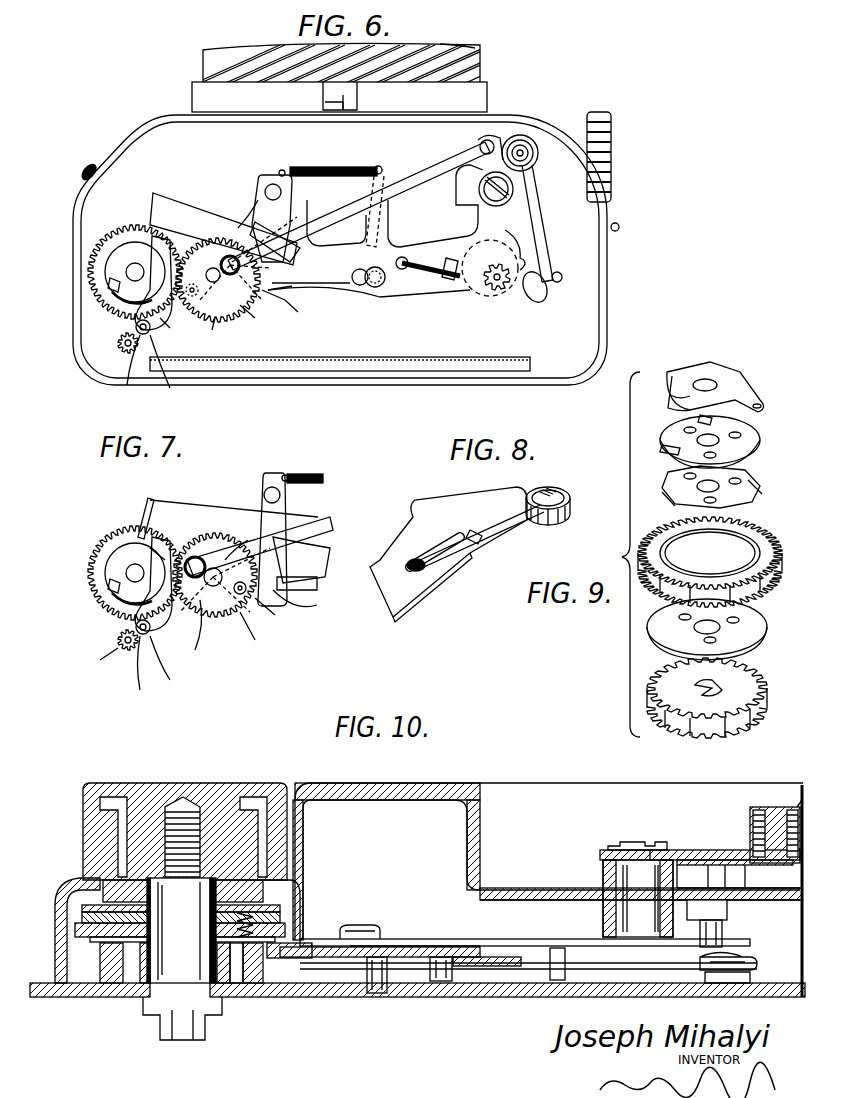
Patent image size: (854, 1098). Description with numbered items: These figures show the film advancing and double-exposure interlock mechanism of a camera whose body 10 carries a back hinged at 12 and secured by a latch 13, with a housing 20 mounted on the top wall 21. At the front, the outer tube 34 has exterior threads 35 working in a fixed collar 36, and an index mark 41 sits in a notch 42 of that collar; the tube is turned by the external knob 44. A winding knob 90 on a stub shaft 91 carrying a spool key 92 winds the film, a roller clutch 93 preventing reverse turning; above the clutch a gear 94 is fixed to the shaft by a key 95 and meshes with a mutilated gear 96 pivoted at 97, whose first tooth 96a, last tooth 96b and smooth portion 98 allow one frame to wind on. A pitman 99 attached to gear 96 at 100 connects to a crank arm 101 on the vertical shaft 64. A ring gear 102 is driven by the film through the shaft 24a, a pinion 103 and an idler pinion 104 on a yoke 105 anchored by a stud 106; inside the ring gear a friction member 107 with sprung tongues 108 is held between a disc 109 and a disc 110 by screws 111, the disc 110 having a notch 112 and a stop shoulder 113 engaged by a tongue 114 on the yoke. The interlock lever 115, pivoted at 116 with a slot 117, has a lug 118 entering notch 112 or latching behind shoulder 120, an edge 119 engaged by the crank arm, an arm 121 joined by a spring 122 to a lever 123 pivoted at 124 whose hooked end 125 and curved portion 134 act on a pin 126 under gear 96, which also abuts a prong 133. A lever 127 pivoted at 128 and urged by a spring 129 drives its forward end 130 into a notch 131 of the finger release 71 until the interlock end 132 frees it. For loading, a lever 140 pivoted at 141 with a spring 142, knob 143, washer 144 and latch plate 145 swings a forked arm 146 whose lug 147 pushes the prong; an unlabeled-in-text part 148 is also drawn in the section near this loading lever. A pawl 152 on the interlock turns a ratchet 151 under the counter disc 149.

In FIG. 6, the body 10 is at (604, 215).
In FIG. 6, the hinge 12 is at (618, 230).
In FIG. 6, the latch 13 is at (86, 165).
In FIG. 10, the housing 20 is at (530, 783).
In FIG. 10, the top wall 21 is at (330, 997).
In FIG. 6, the shaft 24a is at (118, 350).
In FIG. 7, the shaft 24a is at (89, 661).
In FIG. 6, the tube 34 is at (480, 65).
In FIG. 6, the exterior threads 35 is at (470, 50).
In FIG. 6, the collar 36 is at (192, 92).
In FIG. 6, the index mark 41 is at (325, 106).
In FIG. 6, the notch 42 is at (357, 94).
In FIG. 6, the external knob 44 is at (611, 125).
In FIG. 6, the vertical shaft 64 is at (479, 190).
In FIG. 6, the finger release 71 is at (524, 142).
In FIG. 10, the winding knob 90 is at (200, 783).
In FIG. 6, the stub shaft 91 is at (130, 268).
In FIG. 7, the stub shaft 91 is at (130, 570).
In FIG. 10, the stub shaft 91 is at (175, 825).
In FIG. 10, the spool key 92 is at (170, 1040).
In FIG. 10, the roller clutch 93 is at (110, 960).
In FIG. 9, the gear 94 is at (750, 725).
In FIG. 10, the gear 94 is at (98, 960).
In FIG. 10, the key 95 is at (235, 983).
In FIG. 6, the gear 96 is at (225, 322).
In FIG. 7, the gear 96 is at (225, 612).
In FIG. 10, the gear 96 is at (410, 946).
In FIG. 6, the first tooth 96a is at (292, 287).
In FIG. 7, the first tooth 96a is at (240, 548).
In FIG. 6, the last tooth 96b is at (248, 213).
In FIG. 7, the last tooth 96b is at (184, 639).
In FIG. 6, the pivot 97 is at (215, 268).
In FIG. 7, the pivot 97 is at (216, 568).
In FIG. 10, the pivot 97 is at (378, 990).
In FIG. 6, the smooth portion 98 is at (265, 193).
In FIG. 7, the smooth portion 98 is at (240, 555).
In FIG. 6, the pitman 99 is at (420, 172).
In FIG. 7, the pitman 99 is at (333, 520).
In FIG. 10, the pitman 99 is at (520, 946).
In FIG. 6, the attachment point 100 is at (228, 256).
In FIG. 7, the attachment point 100 is at (195, 577).
In FIG. 10, the attachment point 100 is at (370, 910).
In FIG. 6, the crank arm 101 is at (478, 142).
In FIG. 6, the ring gear 102 is at (95, 262).
In FIG. 7, the ring gear 102 is at (98, 560).
In FIG. 9, the ring gear 102 is at (770, 580).
In FIG. 10, the ring gear 102 is at (82, 918).
In FIG. 6, the pinion 103 is at (120, 345).
In FIG. 7, the pinion 103 is at (125, 650).
In FIG. 6, the idler pinion 104 is at (130, 373).
In FIG. 7, the idler pinion 104 is at (150, 673).
In FIG. 6, the yoke 105 is at (136, 328).
In FIG. 7, the yoke 105 is at (136, 628).
In FIG. 9, the yoke 105 is at (735, 392).
In FIG. 10, the yoke 105 is at (85, 890).
In FIG. 6, the stud 106 is at (170, 373).
In FIG. 7, the stud 106 is at (174, 666).
In FIG. 9, the friction member 107 is at (752, 478).
In FIG. 10, the friction member 107 is at (75, 925).
In FIG. 9, the tongues 108 is at (668, 500).
In FIG. 9, the disc 109 is at (745, 636).
In FIG. 10, the disc 109 is at (95, 942).
In FIG. 6, the disc 110 is at (120, 245).
In FIG. 7, the disc 110 is at (105, 573).
In FIG. 9, the disc 110 is at (750, 440).
In FIG. 10, the disc 110 is at (298, 905).
In FIG. 10, the screws 111 is at (290, 931).
In FIG. 6, the notch 112 is at (118, 300).
In FIG. 7, the notch 112 is at (150, 548).
In FIG. 9, the notch 112 is at (700, 418).
In FIG. 6, the stop shoulder 113 is at (165, 325).
In FIG. 7, the stop shoulder 113 is at (118, 601).
In FIG. 9, the stop shoulder 113 is at (665, 452).
In FIG. 6, the tongue 114 is at (108, 285).
In FIG. 7, the tongue 114 is at (108, 586).
In FIG. 9, the tongue 114 is at (670, 395).
In FIG. 6, the interlock lever 115 is at (340, 262).
In FIG. 7, the interlock lever 115 is at (317, 585).
In FIG. 8, the interlock lever 115 is at (400, 612).
In FIG. 10, the interlock lever 115 is at (757, 966).
In FIG. 6, the pivot 116 is at (378, 287).
In FIG. 10, the pivot 116 is at (720, 983).
In FIG. 6, the slot 117 is at (360, 285).
In FIG. 6, the lug 118 is at (153, 200).
In FIG. 7, the lug 118 is at (146, 515).
In FIG. 6, the edge 119 is at (440, 205).
In FIG. 6, the shoulder 120 is at (158, 240).
In FIG. 7, the shoulder 120 is at (160, 540).
In FIG. 9, the shoulder 120 is at (715, 370).
In FIG. 6, the arm 121 is at (378, 166).
In FIG. 6, the spring 122 is at (345, 167).
In FIG. 7, the spring 122 is at (315, 474).
In FIG. 6, the lever 123 is at (290, 210).
In FIG. 7, the lever 123 is at (330, 552).
In FIG. 10, the lever 123 is at (480, 966).
In FIG. 6, the pivot 124 is at (278, 175).
In FIG. 7, the pivot 124 is at (285, 497).
In FIG. 6, the hooked end 125 is at (210, 335).
In FIG. 7, the hooked end 125 is at (261, 633).
In FIG. 6, the pin 126 is at (190, 296).
In FIG. 7, the pin 126 is at (237, 594).
In FIG. 10, the pin 126 is at (440, 981).
In FIG. 6, the lever 127 is at (545, 225).
In FIG. 6, the pivot 128 is at (545, 295).
In FIG. 6, the spring 129 is at (570, 272).
In FIG. 6, the forward end 130 is at (530, 160).
In FIG. 6, the notch 131 is at (520, 135).
In FIG. 6, the end 132 is at (512, 240).
In FIG. 6, the prong 133 is at (293, 311).
In FIG. 7, the prong 133 is at (310, 604).
In FIG. 6, the curved portion 134 is at (261, 321).
In FIG. 7, the curved portion 134 is at (277, 615).
In FIG. 10, the lever 140 is at (695, 850).
In FIG. 10, the pivot 141 is at (625, 867).
In FIG. 10, the spring 142 is at (750, 835).
In FIG. 10, the knob 143 is at (797, 800).
In FIG. 10, the washer 144 is at (785, 905).
In FIG. 10, the latch plate 145 is at (660, 860).
In FIG. 10, the forked arm 146 is at (585, 946).
In FIG. 10, the lug 147 is at (557, 948).
In FIG. 10, the pin 148 is at (722, 930).
In FIG. 6, the numbered disc 149 is at (500, 296).
In FIG. 6, the ratchet 151 is at (495, 290).
In FIG. 8, the ratchet 151 is at (565, 492).
In FIG. 6, the pawl 152 is at (448, 280).